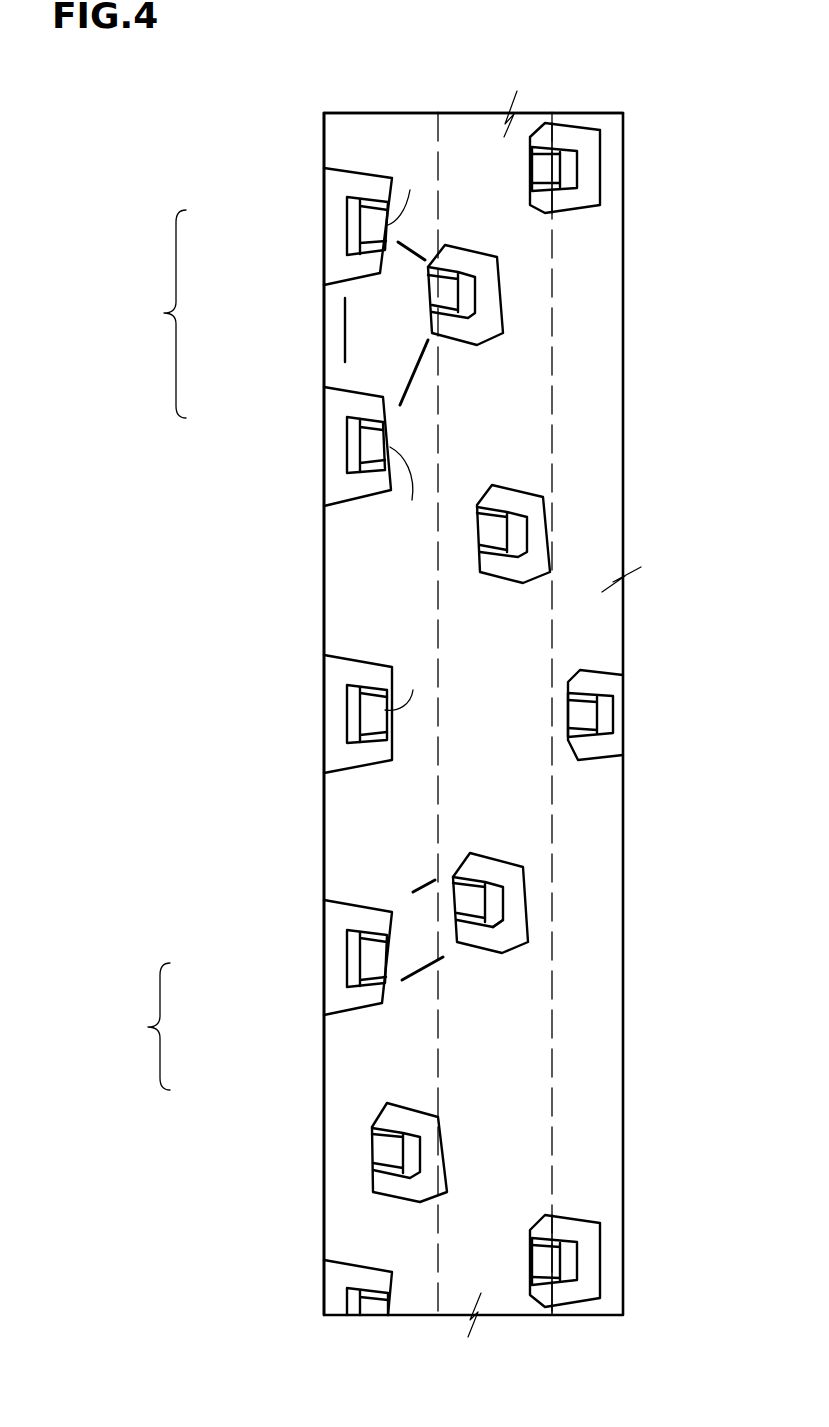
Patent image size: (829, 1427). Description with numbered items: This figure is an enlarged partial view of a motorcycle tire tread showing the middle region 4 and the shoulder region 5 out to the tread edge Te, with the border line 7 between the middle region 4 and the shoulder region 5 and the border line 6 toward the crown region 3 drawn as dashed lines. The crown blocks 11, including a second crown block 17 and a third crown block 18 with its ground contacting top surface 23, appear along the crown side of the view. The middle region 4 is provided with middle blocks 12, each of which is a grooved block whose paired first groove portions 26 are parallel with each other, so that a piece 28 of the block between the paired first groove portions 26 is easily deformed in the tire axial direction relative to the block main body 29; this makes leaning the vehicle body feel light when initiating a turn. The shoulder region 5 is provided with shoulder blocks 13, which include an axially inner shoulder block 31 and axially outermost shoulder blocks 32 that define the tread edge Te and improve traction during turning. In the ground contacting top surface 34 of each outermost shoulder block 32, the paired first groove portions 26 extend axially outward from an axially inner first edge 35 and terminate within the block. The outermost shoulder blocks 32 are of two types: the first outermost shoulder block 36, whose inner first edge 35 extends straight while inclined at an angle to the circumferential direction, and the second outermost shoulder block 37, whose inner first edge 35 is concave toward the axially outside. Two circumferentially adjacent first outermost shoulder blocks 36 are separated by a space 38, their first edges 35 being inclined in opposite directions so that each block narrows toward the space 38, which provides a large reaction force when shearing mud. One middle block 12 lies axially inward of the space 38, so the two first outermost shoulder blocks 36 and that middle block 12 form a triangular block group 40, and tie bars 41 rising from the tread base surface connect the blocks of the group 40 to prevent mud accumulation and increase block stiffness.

The tread edge Te is at (323, 138).
The crown region 3 is at (585, 233).
The middle region 4 is at (488, 158).
The shoulder region 5 is at (413, 153).
The border line 6 is at (552, 1152).
The border line 7 is at (437, 858).
The crown block 11 is at (552, 274).
The middle block 12 is at (448, 292).
The shoulder block 13 is at (139, 1026).
The second crown block 17 is at (607, 714).
The third crown block 18 is at (568, 1262).
The ground contacting top surface 23 is at (570, 163).
The first groove portion 26 is at (388, 462).
The piece 28 is at (465, 897).
The block main body 29 is at (517, 930).
The axially inner shoulder block 31 is at (407, 1152).
The axially outermost shoulder block 32 is at (350, 960).
The ground contacting top surface 34 is at (340, 467).
The axially inner first edge 35 is at (410, 190).
The first outermost shoulder block 36 is at (353, 222).
The second outermost shoulder block 37 is at (350, 713).
The space 38 is at (335, 345).
The block group 40 is at (150, 314).
The tie bar 41 is at (392, 345).